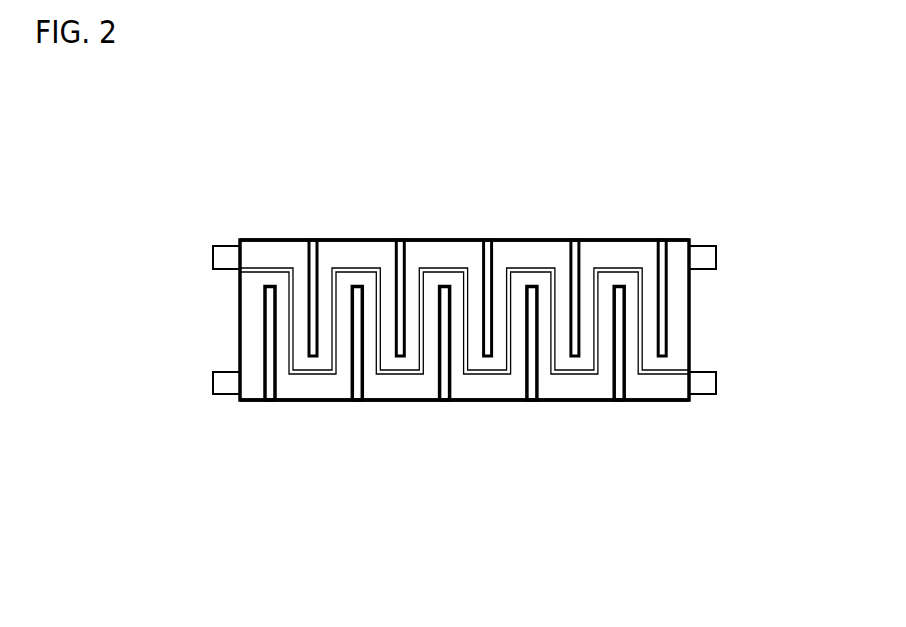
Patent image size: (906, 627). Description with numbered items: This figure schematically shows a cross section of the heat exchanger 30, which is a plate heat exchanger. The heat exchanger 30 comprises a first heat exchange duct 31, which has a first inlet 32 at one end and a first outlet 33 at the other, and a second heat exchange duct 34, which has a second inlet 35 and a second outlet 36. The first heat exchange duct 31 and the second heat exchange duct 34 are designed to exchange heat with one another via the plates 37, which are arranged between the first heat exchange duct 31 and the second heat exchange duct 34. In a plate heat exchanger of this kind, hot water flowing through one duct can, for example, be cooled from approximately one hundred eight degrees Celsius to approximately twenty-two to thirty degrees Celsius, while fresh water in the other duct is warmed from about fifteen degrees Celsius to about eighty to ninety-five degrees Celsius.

The heat exchanger 30 is at (437, 440).
The first heat exchange duct 31 is at (445, 255).
The first inlet 32 is at (223, 260).
The first outlet 33 is at (703, 258).
The second heat exchange duct 34 is at (495, 390).
The second inlet 35 is at (703, 382).
The second outlet 36 is at (222, 385).
The plates 37 is at (508, 313).